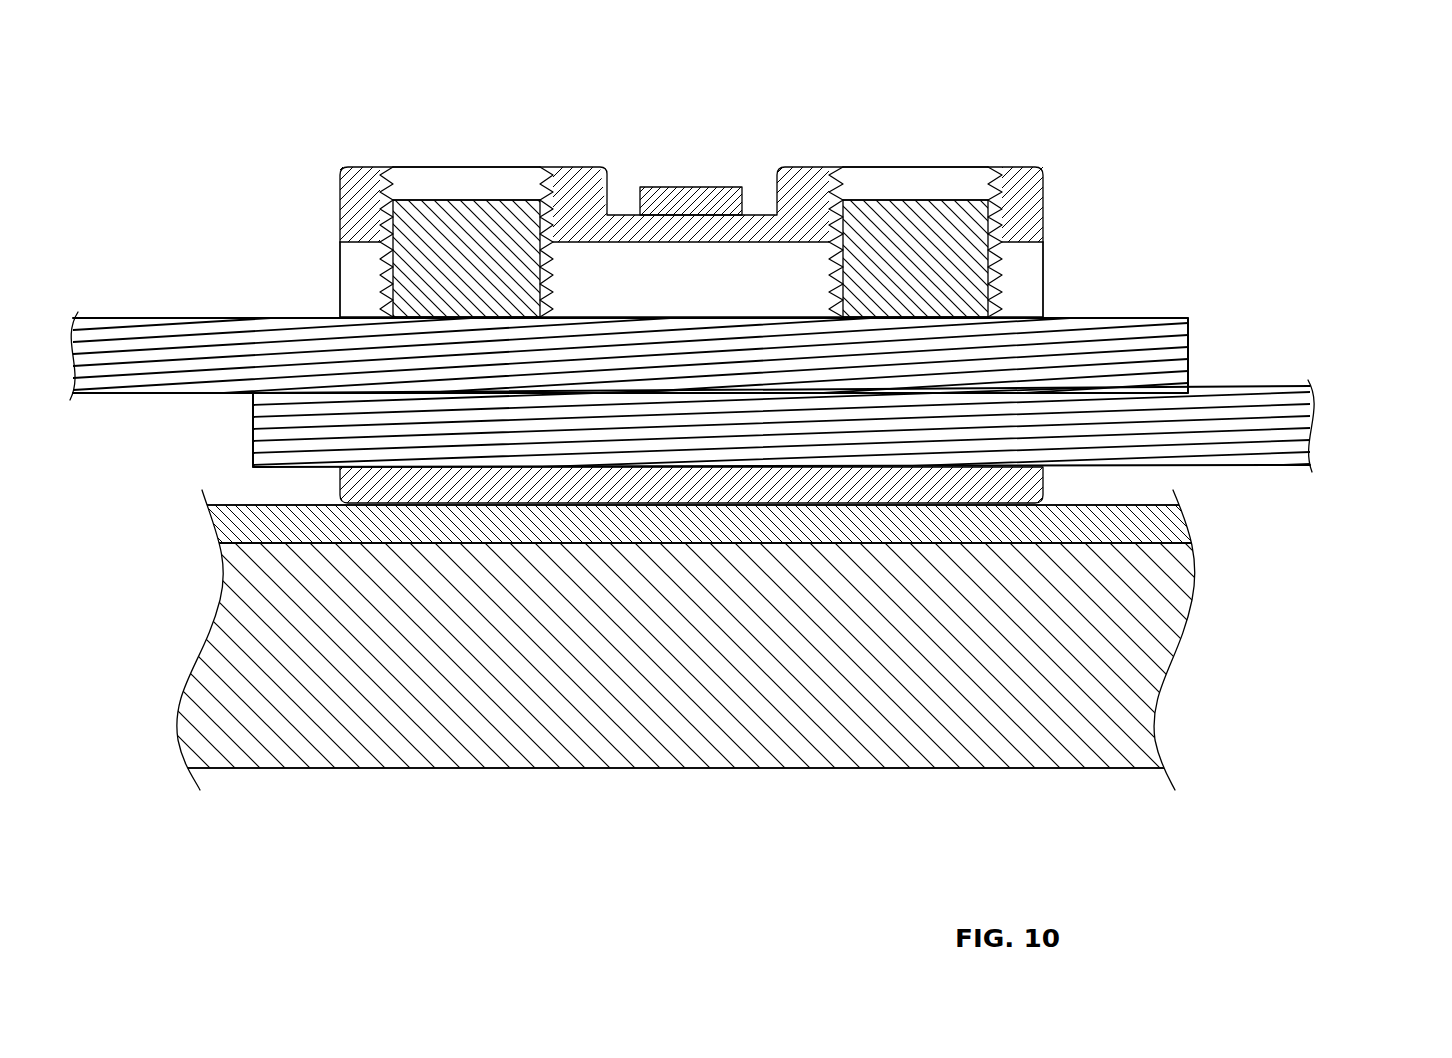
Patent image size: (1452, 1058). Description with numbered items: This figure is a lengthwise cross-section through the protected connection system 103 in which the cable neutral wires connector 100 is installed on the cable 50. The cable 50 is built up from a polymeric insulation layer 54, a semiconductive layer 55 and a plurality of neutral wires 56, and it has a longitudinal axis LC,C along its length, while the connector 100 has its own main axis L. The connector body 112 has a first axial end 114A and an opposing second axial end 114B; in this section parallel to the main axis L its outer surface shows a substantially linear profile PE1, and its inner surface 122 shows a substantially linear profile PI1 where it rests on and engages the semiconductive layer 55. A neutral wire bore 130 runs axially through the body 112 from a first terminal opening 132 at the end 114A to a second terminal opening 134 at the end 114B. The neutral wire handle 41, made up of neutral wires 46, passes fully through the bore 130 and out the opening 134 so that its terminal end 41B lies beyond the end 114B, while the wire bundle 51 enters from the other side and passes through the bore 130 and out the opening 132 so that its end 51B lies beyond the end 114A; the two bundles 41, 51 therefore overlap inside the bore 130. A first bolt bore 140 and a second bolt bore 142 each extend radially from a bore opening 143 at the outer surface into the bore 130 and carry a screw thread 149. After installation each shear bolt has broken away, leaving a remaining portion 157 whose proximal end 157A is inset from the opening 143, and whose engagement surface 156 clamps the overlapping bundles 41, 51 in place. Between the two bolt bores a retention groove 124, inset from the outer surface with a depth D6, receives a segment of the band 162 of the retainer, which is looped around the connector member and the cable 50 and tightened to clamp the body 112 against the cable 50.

The cable neutral wires connector 100 is at (165, 97).
The connector assembly 103 is at (1062, 95).
The substantially linear profile PE1 is at (823, 103).
The neutral wire handle 41 is at (170, 314).
The terminal end of the wire bundle 41B is at (1190, 340).
The neutral wires 46 is at (246, 368).
The wire bundle 51 is at (1262, 388).
The end of second optical fiber ribbon 51B is at (253, 430).
The neutral wires 56 is at (1210, 435).
The cable 50 is at (1017, 774).
The polymeric insulation layer 54 is at (1135, 688).
The semiconductive layer 55 is at (1152, 533).
The inner surface 122 is at (317, 505).
The connector body 112 is at (570, 482).
The neutral wire bore 130 is at (720, 287).
The first terminal opening 132 is at (340, 263).
The second terminal opening 134 is at (1043, 292).
The first axial end 114A is at (340, 210).
The second axial end 114B is at (1043, 212).
The retention groove 124 is at (776, 212).
The band 162 is at (690, 194).
The remaining portion of bolt 157 is at (445, 240).
The proximal end of remaining portion 157A is at (412, 198).
The bore opening 143 is at (398, 168).
The first bolt bore 140 is at (508, 185).
The screw thread 149 is at (835, 200).
The second bolt bore 142 is at (938, 182).
The engagement surface 156 is at (477, 320).
The depth D6 is at (1045, 167).
The main axis L is at (1440, 398).
The longitudinal axis of cable LC,C is at (798, 888).
The substantially linear profile PI1 is at (750, 522).